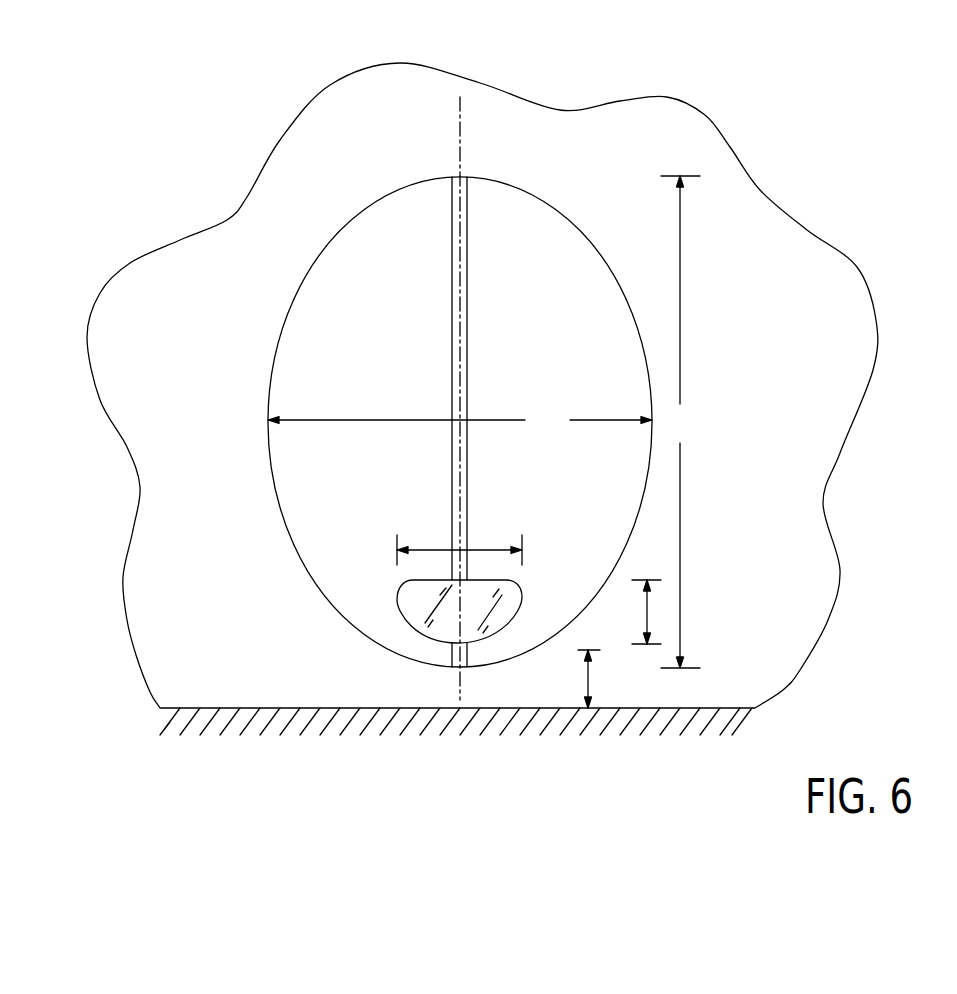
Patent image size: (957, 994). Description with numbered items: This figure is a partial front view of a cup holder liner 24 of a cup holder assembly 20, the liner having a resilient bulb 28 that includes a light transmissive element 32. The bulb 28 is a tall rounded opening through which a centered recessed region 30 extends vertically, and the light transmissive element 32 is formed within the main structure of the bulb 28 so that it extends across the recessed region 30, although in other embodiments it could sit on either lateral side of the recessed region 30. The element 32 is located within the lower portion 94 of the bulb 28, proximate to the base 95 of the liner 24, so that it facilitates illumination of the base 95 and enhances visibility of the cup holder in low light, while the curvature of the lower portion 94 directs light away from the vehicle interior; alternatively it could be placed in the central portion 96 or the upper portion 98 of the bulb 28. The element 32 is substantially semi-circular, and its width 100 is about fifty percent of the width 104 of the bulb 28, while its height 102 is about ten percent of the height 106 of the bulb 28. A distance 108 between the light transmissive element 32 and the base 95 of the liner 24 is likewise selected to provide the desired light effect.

The cup holder assembly 20 is at (823, 112).
The cup holder liner 24 is at (751, 308).
The resilient bulb 28 is at (565, 248).
The recessed region 30 is at (422, 370).
The light transmissive element 32 is at (423, 610).
The lower portion 94 is at (367, 592).
The base 95 is at (501, 708).
The central portion 96 is at (250, 412).
The upper portion 98 is at (497, 217).
The width 100 is at (433, 548).
The height 102 is at (647, 605).
The width 104 is at (460, 421).
The height 106 is at (679, 422).
The distance 108 is at (587, 690).